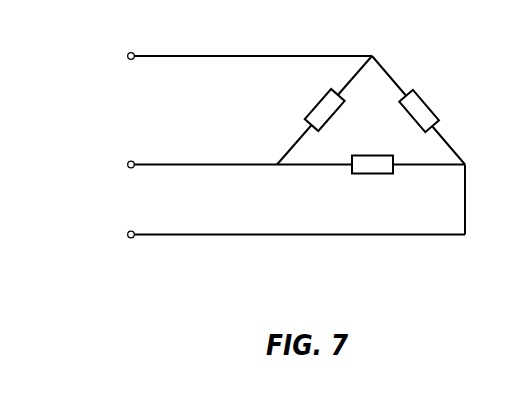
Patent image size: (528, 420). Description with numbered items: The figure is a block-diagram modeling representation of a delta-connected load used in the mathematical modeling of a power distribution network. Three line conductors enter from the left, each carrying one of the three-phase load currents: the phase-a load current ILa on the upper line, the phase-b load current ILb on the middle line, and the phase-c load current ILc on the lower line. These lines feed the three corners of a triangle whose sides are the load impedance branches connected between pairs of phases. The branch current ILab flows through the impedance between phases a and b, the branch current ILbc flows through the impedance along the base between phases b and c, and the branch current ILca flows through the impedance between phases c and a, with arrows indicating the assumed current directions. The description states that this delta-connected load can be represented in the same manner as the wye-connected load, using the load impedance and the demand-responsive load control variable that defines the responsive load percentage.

The load current on phase a ILa is at (111, 66).
The load current on phase b ILb is at (111, 125).
The load current on phase c ILc is at (111, 189).
The branch current between phases a and b ILab is at (262, 66).
The branch current between phases b and c ILbc is at (394, 185).
The branch current between phases c and a ILca is at (426, 88).